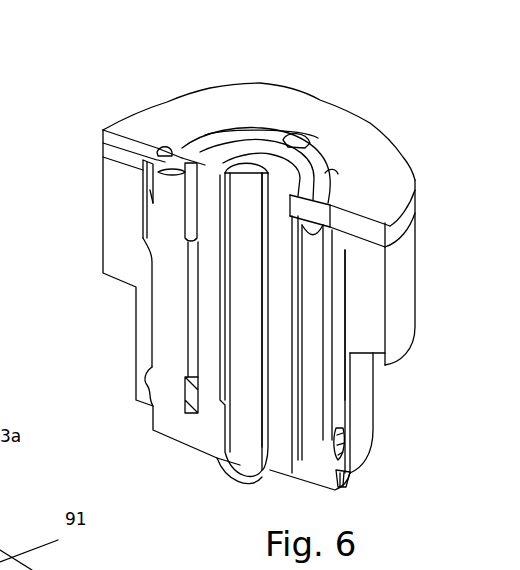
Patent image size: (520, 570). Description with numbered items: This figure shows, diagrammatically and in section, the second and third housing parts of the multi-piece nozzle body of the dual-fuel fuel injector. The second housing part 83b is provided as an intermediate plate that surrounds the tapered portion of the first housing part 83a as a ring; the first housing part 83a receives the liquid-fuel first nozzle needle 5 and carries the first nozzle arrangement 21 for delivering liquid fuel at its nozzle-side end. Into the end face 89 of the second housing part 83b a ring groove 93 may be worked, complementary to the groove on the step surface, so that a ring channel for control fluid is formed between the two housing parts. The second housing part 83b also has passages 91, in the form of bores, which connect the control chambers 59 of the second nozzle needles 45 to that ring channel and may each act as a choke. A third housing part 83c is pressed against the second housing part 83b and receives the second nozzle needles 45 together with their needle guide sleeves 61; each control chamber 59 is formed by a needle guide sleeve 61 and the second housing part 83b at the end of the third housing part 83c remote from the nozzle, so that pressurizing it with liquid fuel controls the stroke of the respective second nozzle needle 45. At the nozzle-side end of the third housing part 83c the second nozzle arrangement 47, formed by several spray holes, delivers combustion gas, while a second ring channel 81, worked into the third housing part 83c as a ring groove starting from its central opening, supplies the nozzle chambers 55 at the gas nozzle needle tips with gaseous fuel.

The first nozzle needle 5 is at (244, 319).
The first nozzle arrangement 21 is at (218, 458).
The second nozzle needles 45 is at (251, 318).
The second nozzle arrangement 47 is at (350, 483).
The nozzle chambers 55 is at (342, 443).
The control chamber 59 is at (172, 172).
The needle guide sleeve 61 is at (150, 190).
The second ring channel 81 is at (145, 387).
The first housing part 83a is at (262, 150).
The second housing part 83b is at (135, 128).
The third housing part 83c is at (115, 250).
The end face 89 is at (390, 195).
The passages 91 is at (158, 160).
The ring groove 93 is at (222, 133).